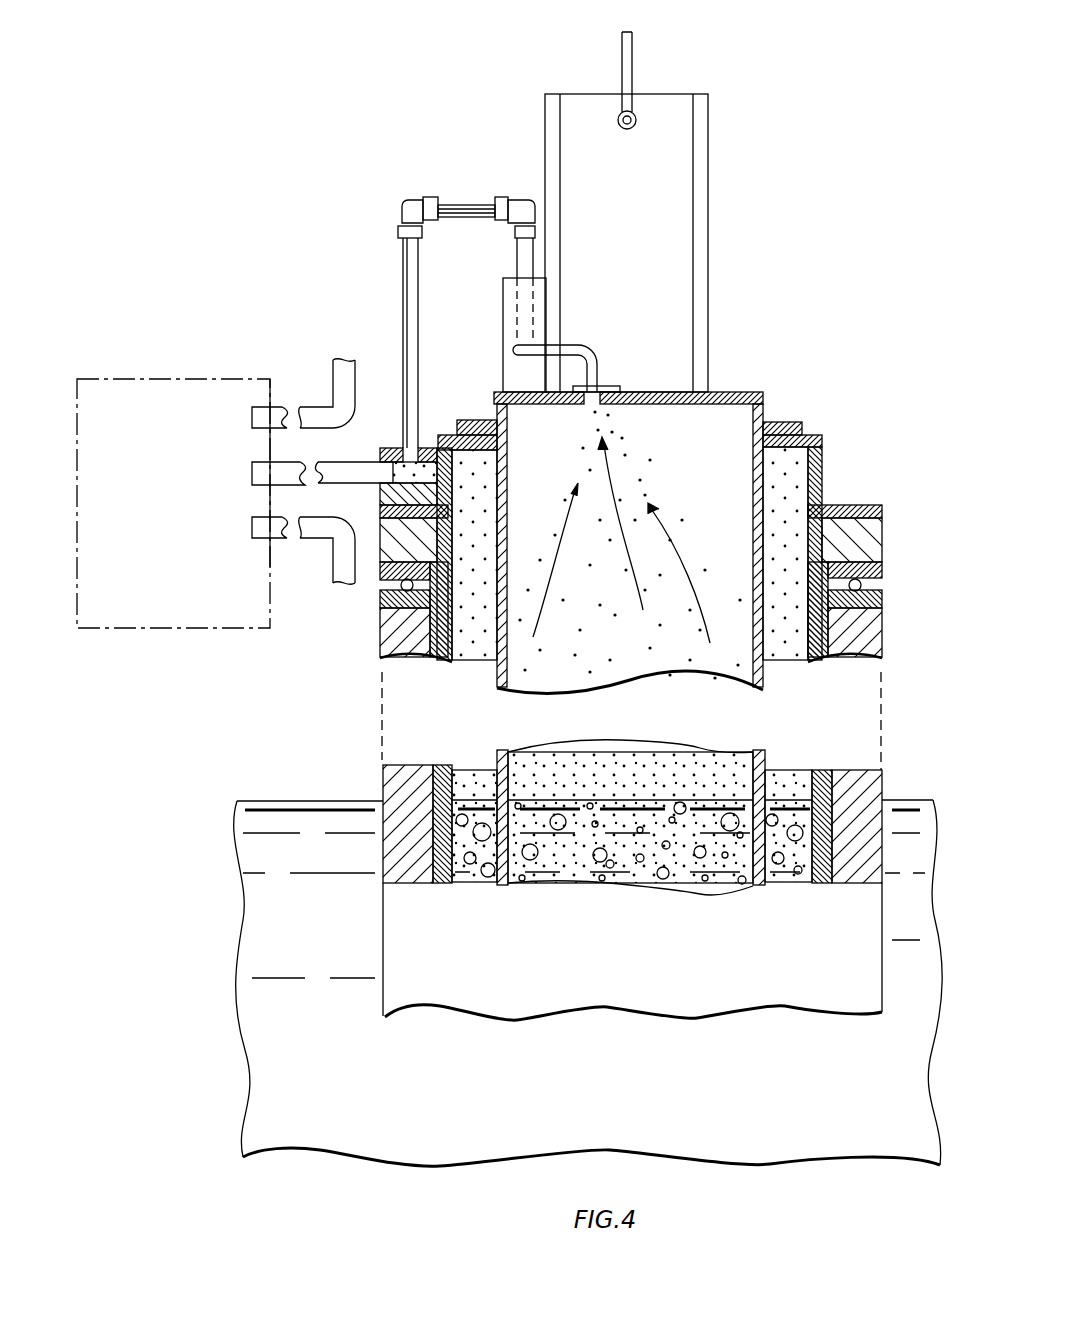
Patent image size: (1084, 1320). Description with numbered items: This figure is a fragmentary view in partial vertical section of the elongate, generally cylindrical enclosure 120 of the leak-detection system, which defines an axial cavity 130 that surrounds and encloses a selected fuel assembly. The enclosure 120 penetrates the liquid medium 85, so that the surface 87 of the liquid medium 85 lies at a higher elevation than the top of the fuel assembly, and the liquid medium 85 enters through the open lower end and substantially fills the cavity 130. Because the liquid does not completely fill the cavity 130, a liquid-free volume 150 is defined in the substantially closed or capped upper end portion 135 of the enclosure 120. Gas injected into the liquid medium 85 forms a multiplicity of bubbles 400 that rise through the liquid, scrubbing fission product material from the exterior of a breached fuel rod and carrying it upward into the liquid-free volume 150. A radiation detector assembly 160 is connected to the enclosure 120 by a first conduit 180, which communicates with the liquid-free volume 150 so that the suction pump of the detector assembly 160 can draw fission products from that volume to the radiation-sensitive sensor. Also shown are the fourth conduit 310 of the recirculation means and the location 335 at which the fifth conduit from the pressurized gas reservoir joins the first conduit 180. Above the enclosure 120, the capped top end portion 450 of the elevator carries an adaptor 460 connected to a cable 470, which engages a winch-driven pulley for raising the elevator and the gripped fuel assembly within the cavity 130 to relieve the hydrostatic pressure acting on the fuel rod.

The liquid medium 85 is at (248, 852).
The surface of liquid medium 87 is at (900, 800).
The enclosure 120 is at (507, 457).
The cavity 130 is at (507, 520).
The upper end portion 135 is at (733, 390).
The liquid-free volume 150 is at (732, 427).
The radiation detector assembly 160 is at (160, 379).
The first conduit 180 is at (252, 475).
The fourth conduit 310 is at (355, 373).
The location 335 is at (252, 527).
The bubbles 400 is at (663, 875).
The capped top end portion 450 is at (494, 397).
The adaptor 460 is at (708, 240).
The cable 470 is at (633, 75).